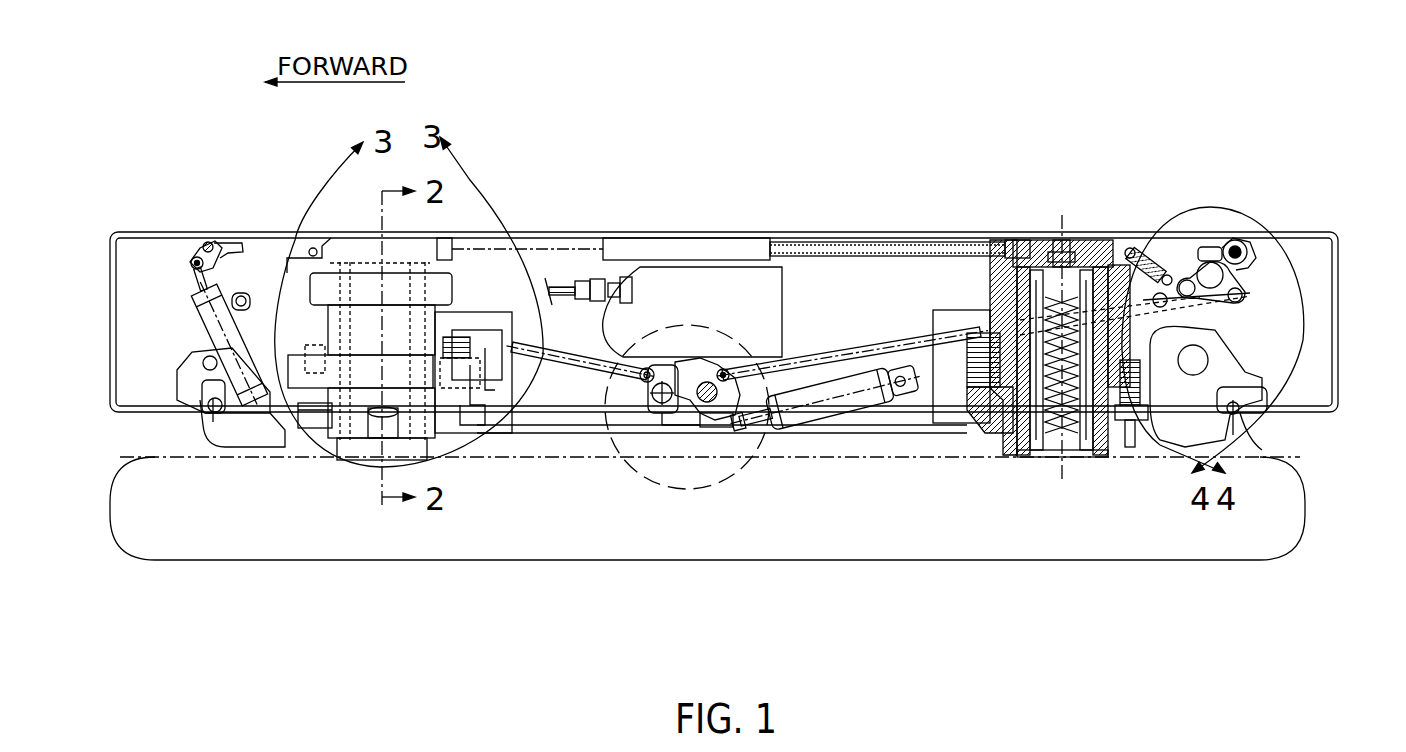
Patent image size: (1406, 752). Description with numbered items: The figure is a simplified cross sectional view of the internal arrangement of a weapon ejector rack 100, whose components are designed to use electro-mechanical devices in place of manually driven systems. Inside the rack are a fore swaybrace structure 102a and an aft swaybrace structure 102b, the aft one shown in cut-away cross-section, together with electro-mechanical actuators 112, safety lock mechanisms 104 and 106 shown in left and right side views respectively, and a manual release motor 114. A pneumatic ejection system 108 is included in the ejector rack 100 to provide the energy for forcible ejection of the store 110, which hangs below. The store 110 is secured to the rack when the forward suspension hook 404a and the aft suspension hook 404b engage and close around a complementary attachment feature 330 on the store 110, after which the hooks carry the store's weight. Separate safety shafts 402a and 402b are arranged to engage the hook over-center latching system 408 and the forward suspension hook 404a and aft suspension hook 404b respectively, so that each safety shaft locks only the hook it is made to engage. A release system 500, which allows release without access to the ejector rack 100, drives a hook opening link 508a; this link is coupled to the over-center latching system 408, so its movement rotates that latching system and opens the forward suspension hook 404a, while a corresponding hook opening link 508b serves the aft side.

The weapon ejector rack 100 is at (720, 122).
The fore swaybrace structure 102a is at (342, 433).
The aft swaybrace structure 102b is at (1015, 455).
The safety lock mechanism 104 is at (190, 325).
The safety lock mechanism 106 is at (1274, 317).
The pneumatic ejection system 108 is at (840, 230).
The store 110 is at (1222, 562).
The electro-mechanical actuators 112 is at (475, 310).
The manual release motor 114 is at (825, 405).
The attachment feature 330 is at (197, 447).
The safety shaft 402a is at (200, 245).
The safety shaft 402b is at (1236, 244).
The forward suspension hook 404a is at (205, 418).
The aft suspension hook 404b is at (1243, 430).
The hook over-center latching system 408 is at (1190, 272).
The release system 500 is at (687, 489).
The hook opening link 508a is at (588, 365).
The hook opening link 508b is at (918, 257).